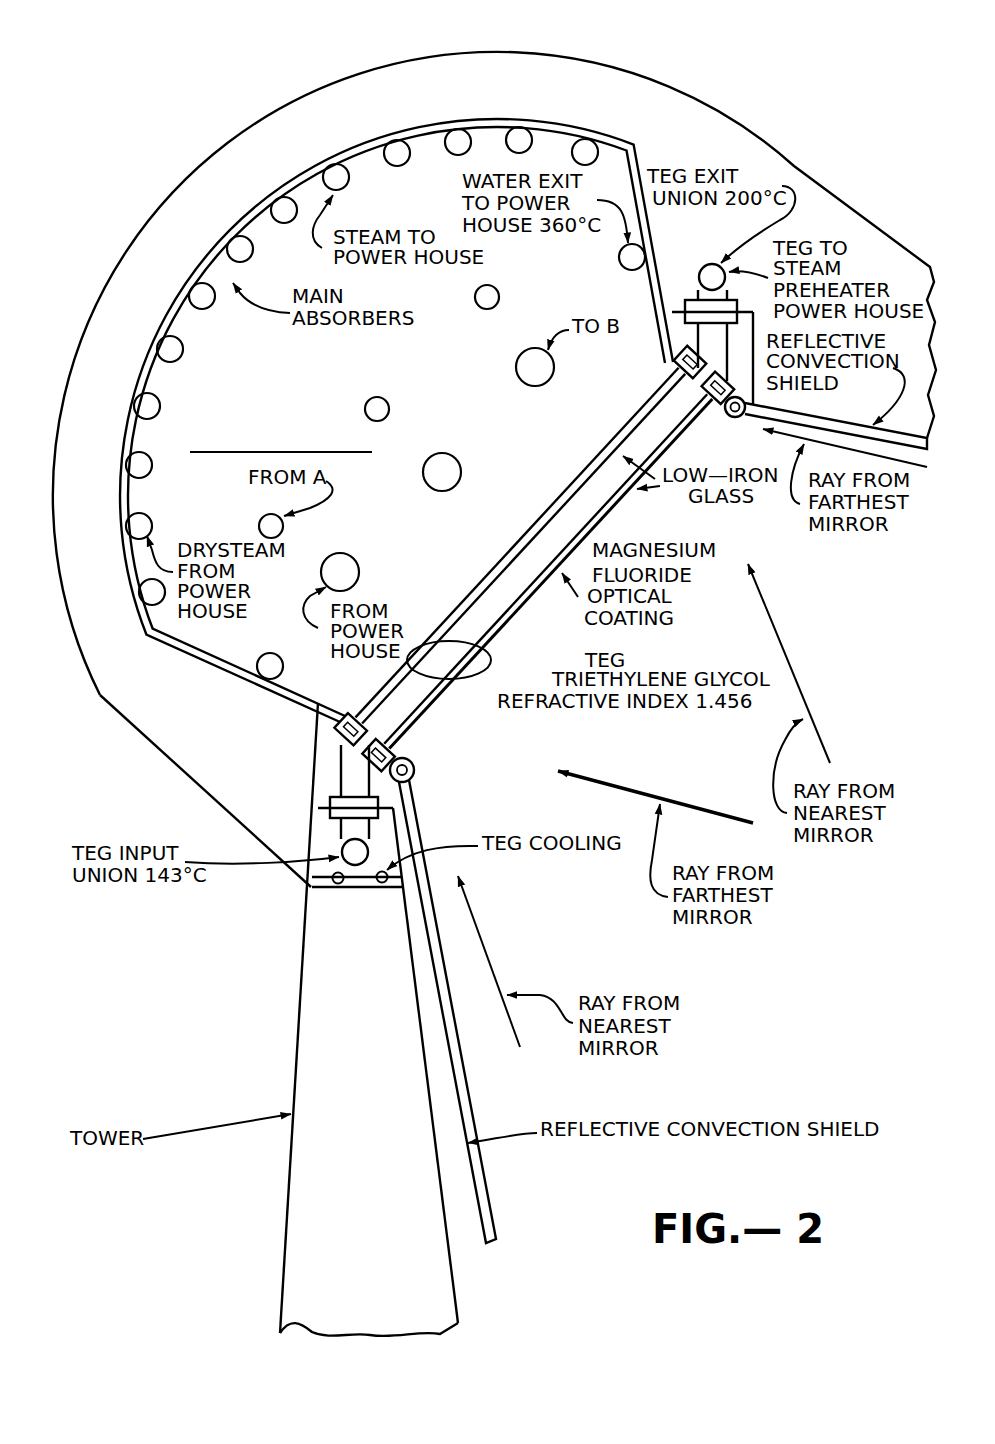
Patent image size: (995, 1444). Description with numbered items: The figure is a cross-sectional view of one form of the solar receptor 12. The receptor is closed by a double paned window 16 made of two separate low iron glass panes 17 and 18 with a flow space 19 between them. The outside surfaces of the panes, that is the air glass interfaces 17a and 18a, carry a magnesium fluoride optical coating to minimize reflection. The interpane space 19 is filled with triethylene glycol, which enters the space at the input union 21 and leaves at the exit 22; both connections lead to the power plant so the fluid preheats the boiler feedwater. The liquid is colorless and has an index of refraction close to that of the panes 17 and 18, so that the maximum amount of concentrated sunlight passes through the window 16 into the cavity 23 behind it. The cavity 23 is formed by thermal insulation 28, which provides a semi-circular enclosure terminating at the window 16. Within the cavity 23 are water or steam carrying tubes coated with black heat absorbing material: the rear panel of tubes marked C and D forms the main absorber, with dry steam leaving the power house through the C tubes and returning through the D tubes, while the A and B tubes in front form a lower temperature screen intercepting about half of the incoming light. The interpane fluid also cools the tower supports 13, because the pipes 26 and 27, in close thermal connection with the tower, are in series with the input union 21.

The receptor 12 is at (494, 457).
The tower supports 13 is at (315, 1019).
The double paned window 16 is at (449, 681).
The glass pane 17 is at (520, 546).
The air glass interface 17a is at (523, 549).
The glass pane 18 is at (548, 572).
The air glass interface 18a is at (550, 574).
The flow space 19 is at (799, 423).
The input union 21 is at (394, 805).
The exit 22 is at (706, 318).
The cavity 23 is at (385, 403).
The pipe 26 is at (332, 904).
The pipe 27 is at (385, 903).
The thermal insulation 28 is at (346, 420).